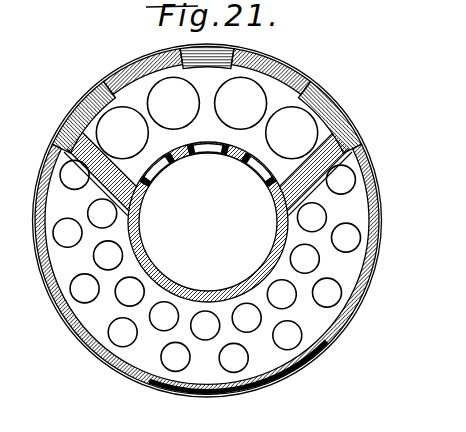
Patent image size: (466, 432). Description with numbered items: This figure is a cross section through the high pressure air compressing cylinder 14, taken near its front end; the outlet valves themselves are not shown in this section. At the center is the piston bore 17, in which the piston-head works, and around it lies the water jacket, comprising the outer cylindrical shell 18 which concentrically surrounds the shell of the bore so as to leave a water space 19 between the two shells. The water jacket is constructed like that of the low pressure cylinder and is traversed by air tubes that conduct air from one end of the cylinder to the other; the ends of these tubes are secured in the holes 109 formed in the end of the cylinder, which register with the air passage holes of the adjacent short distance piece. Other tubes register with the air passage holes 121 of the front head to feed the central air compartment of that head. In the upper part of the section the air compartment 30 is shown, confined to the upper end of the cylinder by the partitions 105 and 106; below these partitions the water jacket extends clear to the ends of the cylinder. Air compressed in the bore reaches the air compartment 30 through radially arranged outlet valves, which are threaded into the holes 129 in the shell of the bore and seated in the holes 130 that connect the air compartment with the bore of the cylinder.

The high pressure air compressing cylinder 14 is at (148, 57).
The bore 17 is at (141, 229).
The outer cylindrical shell 18 is at (100, 363).
The water space 19 is at (88, 318).
The air compartment 30 is at (294, 78).
The partition 105 is at (46, 160).
The partition 106 is at (353, 163).
The holes 109 is at (162, 370).
The air passage holes 121 is at (65, 185).
The holes 129 is at (216, 47).
The holes 130 is at (150, 173).